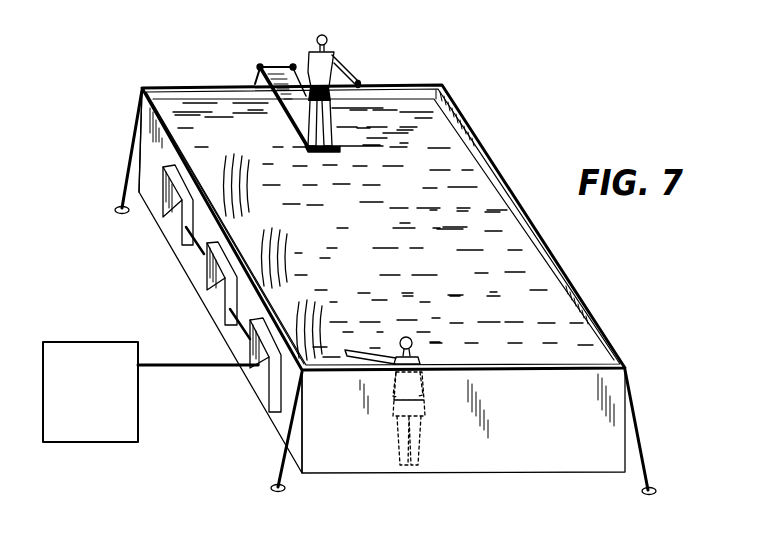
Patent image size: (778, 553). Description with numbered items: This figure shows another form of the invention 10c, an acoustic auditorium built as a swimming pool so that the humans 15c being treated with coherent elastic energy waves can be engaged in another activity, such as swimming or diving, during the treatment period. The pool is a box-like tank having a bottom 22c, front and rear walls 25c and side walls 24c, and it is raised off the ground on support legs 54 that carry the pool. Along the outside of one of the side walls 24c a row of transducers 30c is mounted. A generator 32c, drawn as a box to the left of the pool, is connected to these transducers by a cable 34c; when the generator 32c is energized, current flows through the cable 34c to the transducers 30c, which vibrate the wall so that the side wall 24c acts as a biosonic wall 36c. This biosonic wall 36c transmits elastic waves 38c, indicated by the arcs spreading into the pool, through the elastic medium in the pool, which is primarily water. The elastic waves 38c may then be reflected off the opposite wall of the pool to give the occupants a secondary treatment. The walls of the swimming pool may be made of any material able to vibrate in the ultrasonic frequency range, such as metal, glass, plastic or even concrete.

The invention 10c is at (484, 136).
The humans 15c is at (367, 85).
The bottom 22c is at (478, 202).
The side walls 24c is at (150, 152).
The front and rear walls 25c is at (190, 88).
The transducers 30c is at (210, 287).
The generator 32c is at (97, 442).
The cable 34c is at (187, 358).
The biosonic wall 36c is at (188, 153).
The elastic waves 38c is at (252, 190).
The support legs 54 is at (278, 464).